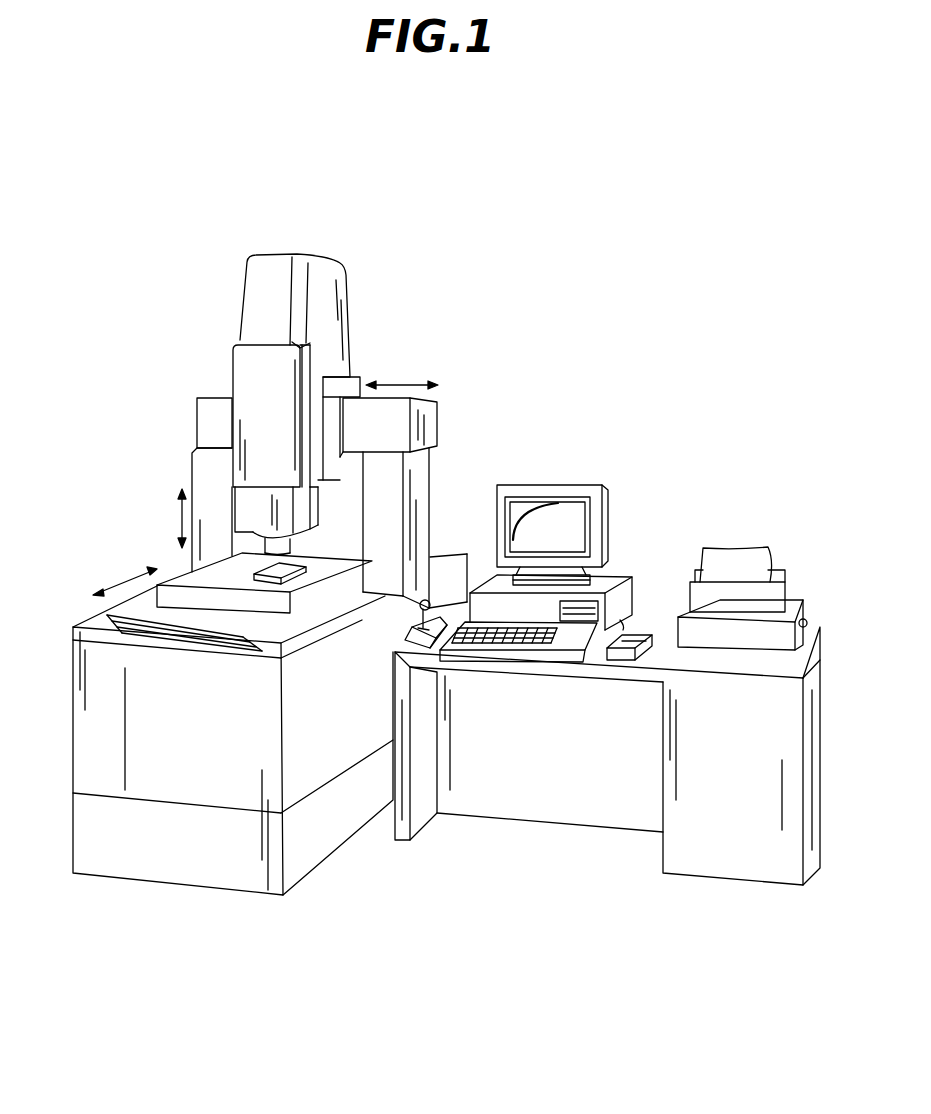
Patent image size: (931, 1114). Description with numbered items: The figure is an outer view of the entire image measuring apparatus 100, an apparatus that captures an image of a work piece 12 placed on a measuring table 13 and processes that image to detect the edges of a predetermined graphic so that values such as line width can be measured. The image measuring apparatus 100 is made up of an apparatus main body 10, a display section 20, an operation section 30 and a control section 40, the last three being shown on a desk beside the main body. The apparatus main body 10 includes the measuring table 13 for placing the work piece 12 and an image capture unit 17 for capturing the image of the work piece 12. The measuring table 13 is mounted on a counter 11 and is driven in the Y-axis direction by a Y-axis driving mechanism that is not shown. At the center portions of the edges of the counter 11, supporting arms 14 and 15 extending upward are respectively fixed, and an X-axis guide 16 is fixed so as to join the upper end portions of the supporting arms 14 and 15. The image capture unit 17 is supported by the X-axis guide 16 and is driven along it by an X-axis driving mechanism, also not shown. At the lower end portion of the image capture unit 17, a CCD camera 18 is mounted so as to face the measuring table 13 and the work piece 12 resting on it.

The image measuring apparatus 100 is at (640, 322).
The apparatus main body 10 is at (361, 289).
The counter 11 is at (93, 620).
The work piece 12 is at (285, 573).
The measuring table 13 is at (229, 571).
The supporting arm 14 is at (192, 469).
The supporting arm 15 is at (423, 497).
The X-axis guide 16 is at (215, 397).
The image capture unit 17 is at (247, 275).
The CCD camera 18 is at (312, 537).
The display section 20 is at (548, 481).
The operation section 30 is at (546, 672).
The control section 40 is at (620, 565).